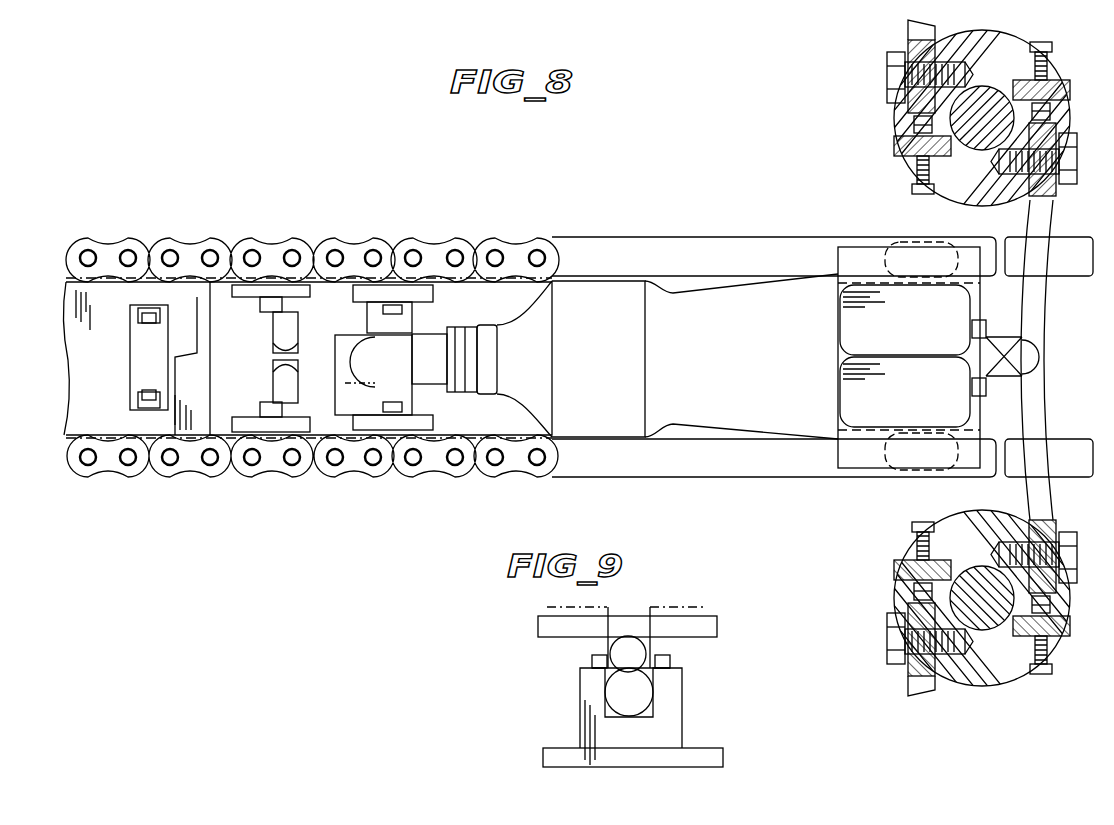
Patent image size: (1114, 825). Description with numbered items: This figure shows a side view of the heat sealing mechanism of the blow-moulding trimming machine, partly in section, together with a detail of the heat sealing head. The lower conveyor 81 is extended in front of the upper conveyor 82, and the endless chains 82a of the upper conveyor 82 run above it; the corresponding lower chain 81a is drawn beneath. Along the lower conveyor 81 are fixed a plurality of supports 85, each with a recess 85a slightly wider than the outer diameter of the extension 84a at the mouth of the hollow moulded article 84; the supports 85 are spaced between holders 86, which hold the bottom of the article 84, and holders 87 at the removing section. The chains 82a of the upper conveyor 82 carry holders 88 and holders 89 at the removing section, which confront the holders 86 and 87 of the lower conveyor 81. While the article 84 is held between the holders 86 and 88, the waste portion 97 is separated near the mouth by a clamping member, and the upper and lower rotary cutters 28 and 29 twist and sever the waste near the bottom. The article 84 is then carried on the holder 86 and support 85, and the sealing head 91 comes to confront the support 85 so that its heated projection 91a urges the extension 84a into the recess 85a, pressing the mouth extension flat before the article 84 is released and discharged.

In FIG. 8, the upper rotary cutter 28 is at (903, 148).
In FIG. 8, the lower rotary cutter 29 is at (913, 570).
In FIG. 8, the lower conveyor 81 is at (761, 472).
In FIG. 8, the lower chain 81a is at (478, 477).
In FIG. 8, the upper conveyor 82 is at (707, 237).
In FIG. 8, the endless chains of the upper conveyor 82a is at (471, 240).
In FIG. 8, the hollow moulded article 84 is at (798, 423).
In FIG. 8, the extension of the mouth 84a is at (396, 347).
In FIG. 9, the extension of the mouth 84a is at (647, 645).
In FIG. 8, the support 85 is at (348, 398).
In FIG. 9, the support 85 is at (672, 736).
In FIG. 8, the recess 85a is at (383, 384).
In FIG. 9, the recess 85a is at (648, 708).
In FIG. 8, the holder 86 is at (873, 428).
In FIG. 8, the holder at the removing section 87 is at (280, 382).
In FIG. 8, the holder 88 is at (860, 253).
In FIG. 8, the holder at the removing section 89 is at (273, 332).
In FIG. 8, the sealing head 91 is at (362, 316).
In FIG. 9, the sealing head 91 is at (710, 626).
In FIG. 9, the projection 91a is at (645, 641).
In FIG. 9, the waste portion 97 is at (605, 662).